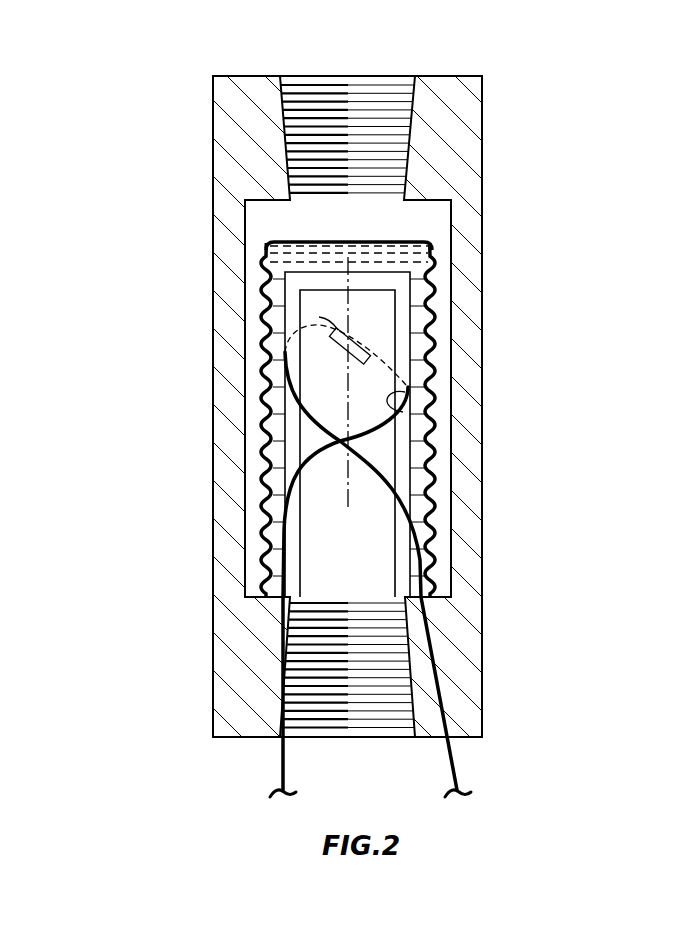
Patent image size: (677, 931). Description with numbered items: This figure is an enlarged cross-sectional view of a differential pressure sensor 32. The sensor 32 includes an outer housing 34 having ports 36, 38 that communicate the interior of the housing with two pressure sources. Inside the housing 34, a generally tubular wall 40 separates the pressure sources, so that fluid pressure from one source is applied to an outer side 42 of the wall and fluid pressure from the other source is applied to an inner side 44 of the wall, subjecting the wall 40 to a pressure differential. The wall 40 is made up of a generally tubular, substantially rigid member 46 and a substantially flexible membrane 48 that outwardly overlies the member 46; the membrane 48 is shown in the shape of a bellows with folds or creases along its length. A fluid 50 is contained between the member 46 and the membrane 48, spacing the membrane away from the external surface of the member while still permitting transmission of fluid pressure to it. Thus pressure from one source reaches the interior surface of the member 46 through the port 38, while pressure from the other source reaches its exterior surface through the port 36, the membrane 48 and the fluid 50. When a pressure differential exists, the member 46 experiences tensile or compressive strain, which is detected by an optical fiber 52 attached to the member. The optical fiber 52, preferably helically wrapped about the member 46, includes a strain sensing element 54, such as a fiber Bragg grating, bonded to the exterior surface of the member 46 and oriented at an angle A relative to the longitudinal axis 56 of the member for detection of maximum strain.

The sensor 32 is at (437, 465).
The outer housing 34 is at (485, 308).
The port 36 is at (413, 88).
The port 38 is at (412, 687).
The tubular wall 40 is at (263, 412).
The outer side 42 is at (270, 325).
The inner side 44 is at (412, 413).
The rigid member 46 is at (412, 467).
The flexible membrane 48 is at (412, 497).
The fluid 50 is at (290, 260).
The optical fiber 52 is at (386, 487).
The strain sensing element 54 is at (360, 347).
The longitudinal axis 56 is at (347, 378).